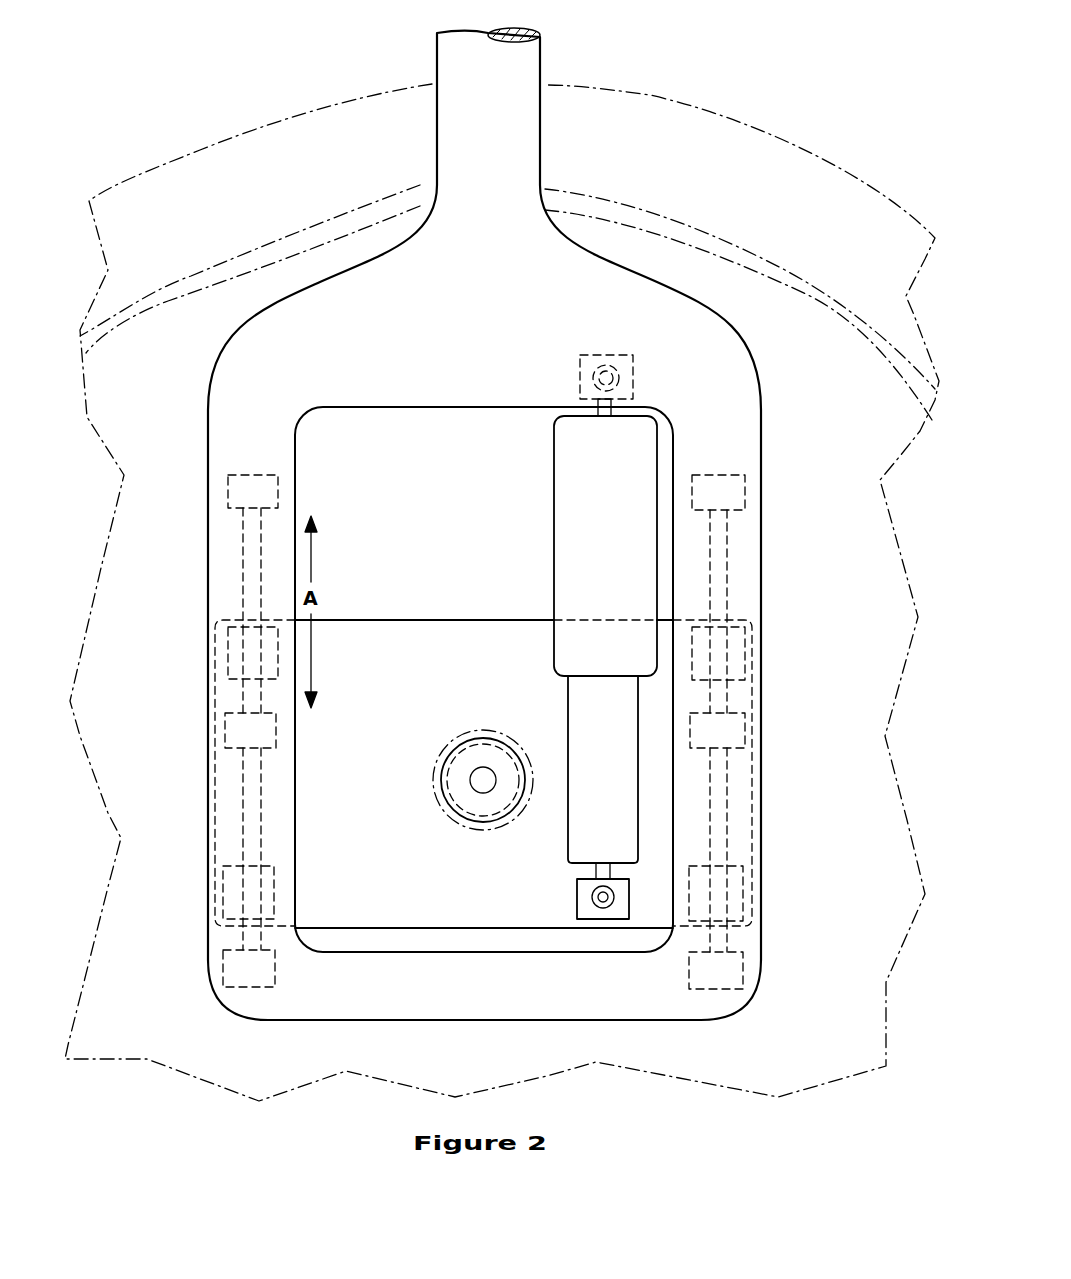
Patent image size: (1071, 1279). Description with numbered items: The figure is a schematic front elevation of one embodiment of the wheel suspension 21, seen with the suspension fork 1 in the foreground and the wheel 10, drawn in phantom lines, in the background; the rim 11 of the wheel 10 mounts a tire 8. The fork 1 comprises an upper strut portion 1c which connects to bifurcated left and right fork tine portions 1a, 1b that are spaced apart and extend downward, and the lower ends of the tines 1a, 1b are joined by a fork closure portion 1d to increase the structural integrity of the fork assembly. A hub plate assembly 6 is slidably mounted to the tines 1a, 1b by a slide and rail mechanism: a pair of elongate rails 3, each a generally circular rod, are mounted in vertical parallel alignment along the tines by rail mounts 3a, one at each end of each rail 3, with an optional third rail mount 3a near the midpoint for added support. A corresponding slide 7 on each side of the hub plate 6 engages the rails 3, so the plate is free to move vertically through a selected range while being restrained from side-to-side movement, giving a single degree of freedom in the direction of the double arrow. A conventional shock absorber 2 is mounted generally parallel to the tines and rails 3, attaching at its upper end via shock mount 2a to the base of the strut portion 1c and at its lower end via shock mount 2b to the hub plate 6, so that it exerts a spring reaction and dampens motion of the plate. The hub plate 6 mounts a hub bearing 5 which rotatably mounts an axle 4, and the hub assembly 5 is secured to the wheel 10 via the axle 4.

The wheel suspension 21 is at (243, 58).
The suspension fork 1 is at (600, 250).
The left fork tine portion 1a is at (208, 508).
The right fork tine portion 1b is at (762, 580).
The upper strut portion 1c is at (541, 60).
The fork closure portion 1d is at (381, 1020).
The shock absorber 2 is at (553, 512).
The upper shock mount 2a is at (620, 367).
The lower shock mount 2b is at (592, 894).
The rail 3 is at (241, 585).
The rail mount 3a is at (231, 475).
The axle 4 is at (497, 780).
The hub bearing 5 is at (482, 737).
The hub plate assembly 6 is at (417, 619).
The slide 7 is at (219, 659).
The tire 8 is at (231, 179).
The wheel 10 is at (886, 466).
The rim 11 is at (142, 305).